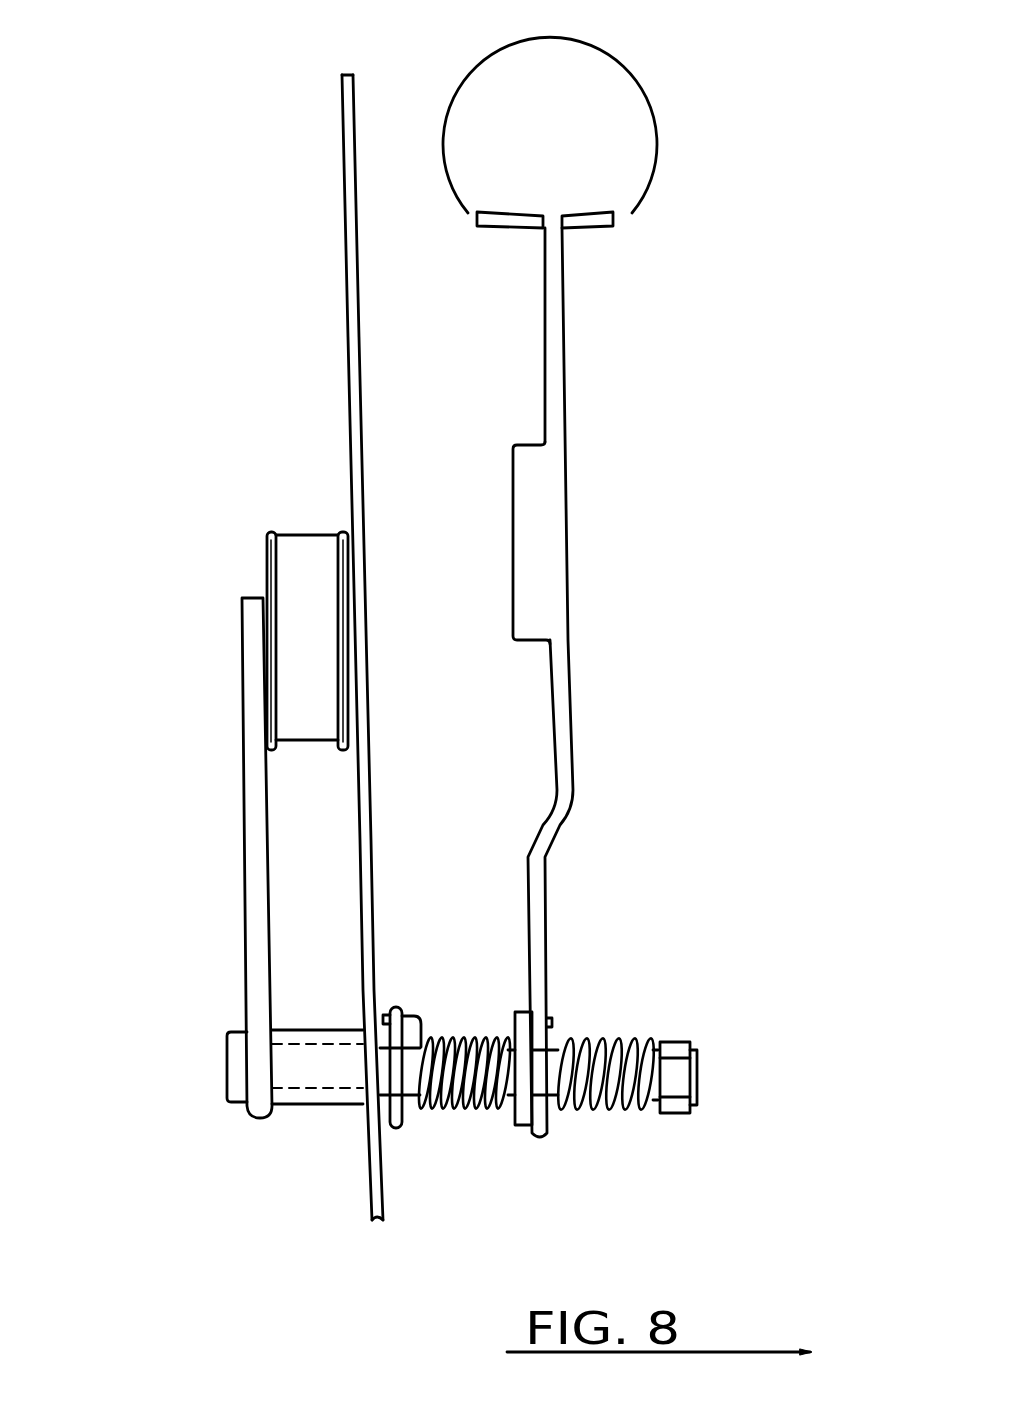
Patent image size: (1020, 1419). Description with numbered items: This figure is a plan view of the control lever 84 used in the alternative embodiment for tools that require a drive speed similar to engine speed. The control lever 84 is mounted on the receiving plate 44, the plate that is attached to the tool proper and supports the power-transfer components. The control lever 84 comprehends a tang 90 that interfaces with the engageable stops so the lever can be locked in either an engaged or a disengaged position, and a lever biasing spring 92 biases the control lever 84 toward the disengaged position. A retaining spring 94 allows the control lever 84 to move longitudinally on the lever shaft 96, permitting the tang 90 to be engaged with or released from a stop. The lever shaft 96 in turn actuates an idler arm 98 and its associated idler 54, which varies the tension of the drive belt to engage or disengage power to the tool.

The receiving plate 44 is at (342, 222).
The idler 54 is at (253, 571).
The control lever 84 is at (565, 362).
The tang 90 is at (543, 543).
The lever biasing spring 92 is at (472, 1026).
The retaining spring 94 is at (590, 1042).
The lever shaft 96 is at (706, 1077).
The idler arm 98 is at (243, 840).